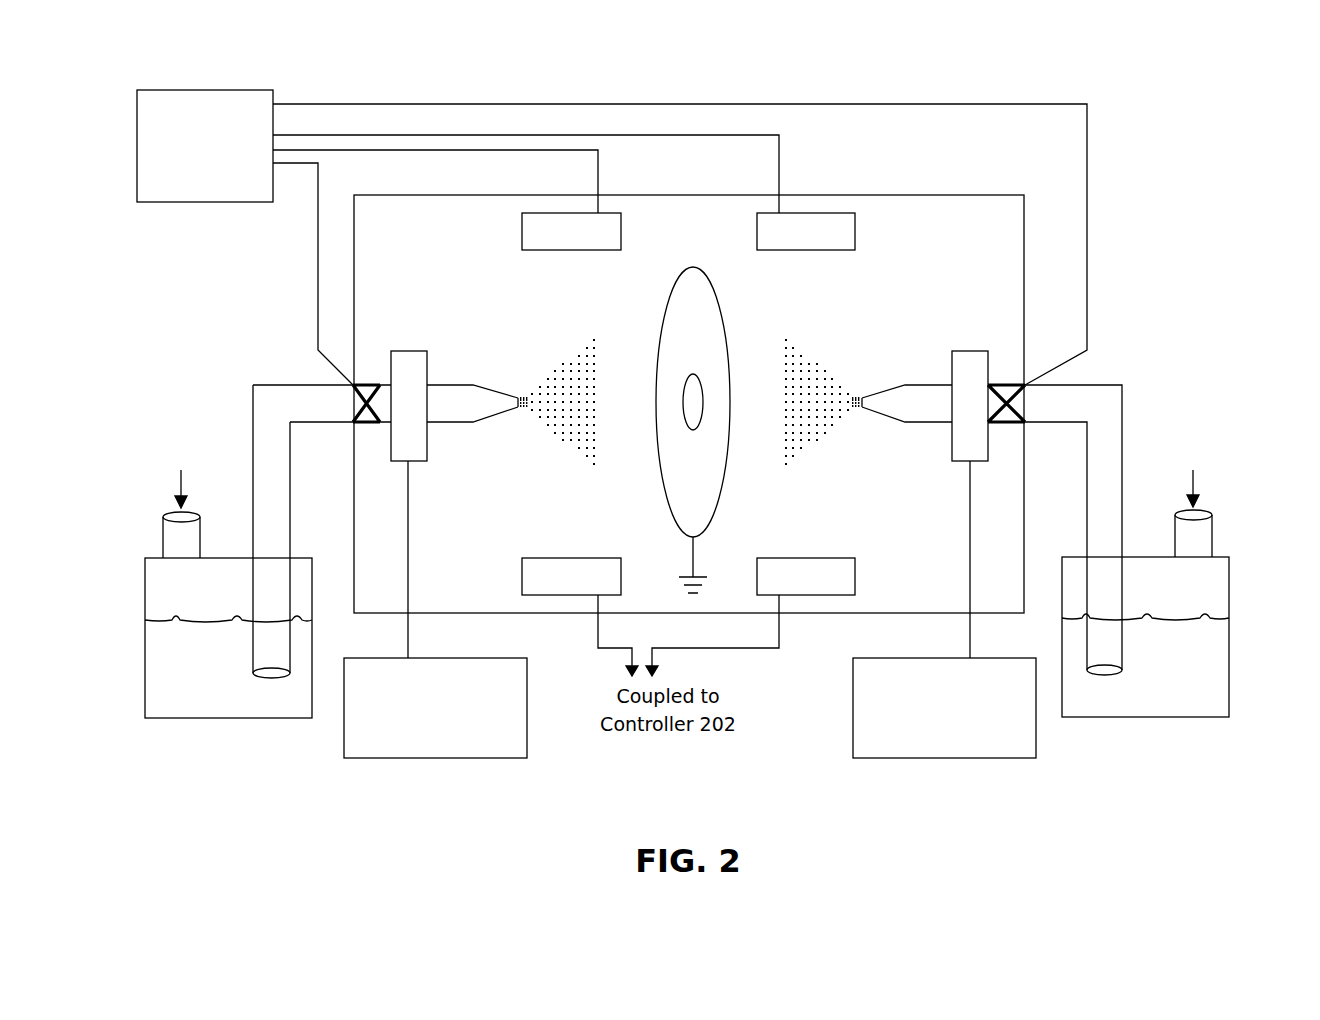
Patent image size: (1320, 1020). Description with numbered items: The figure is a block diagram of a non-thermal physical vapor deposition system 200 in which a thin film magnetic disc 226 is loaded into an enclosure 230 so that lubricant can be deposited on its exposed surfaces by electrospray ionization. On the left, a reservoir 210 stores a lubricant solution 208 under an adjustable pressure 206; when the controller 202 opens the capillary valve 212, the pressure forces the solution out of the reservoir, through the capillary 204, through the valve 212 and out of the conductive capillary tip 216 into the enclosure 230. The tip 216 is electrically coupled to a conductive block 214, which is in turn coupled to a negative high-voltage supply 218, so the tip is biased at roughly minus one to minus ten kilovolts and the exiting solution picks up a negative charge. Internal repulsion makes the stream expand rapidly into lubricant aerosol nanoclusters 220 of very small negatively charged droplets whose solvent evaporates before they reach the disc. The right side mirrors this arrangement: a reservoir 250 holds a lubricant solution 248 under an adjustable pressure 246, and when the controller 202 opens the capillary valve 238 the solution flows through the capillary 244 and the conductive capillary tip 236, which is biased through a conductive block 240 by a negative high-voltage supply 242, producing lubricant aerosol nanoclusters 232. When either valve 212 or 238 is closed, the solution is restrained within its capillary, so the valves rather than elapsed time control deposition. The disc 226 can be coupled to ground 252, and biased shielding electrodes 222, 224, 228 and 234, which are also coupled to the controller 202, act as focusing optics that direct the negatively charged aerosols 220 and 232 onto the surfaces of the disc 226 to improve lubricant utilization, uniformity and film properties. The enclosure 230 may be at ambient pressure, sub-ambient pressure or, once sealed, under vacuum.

The non-thermal physical vapor deposition system 200 is at (1218, 56).
The controller 202 is at (612, 237).
The capillary 204 is at (253, 385).
The adjustable pressure 206 is at (155, 486).
The lubricant solution 208 is at (186, 692).
The reservoir 210 is at (145, 688).
The capillary valve 212 is at (367, 385).
The conductive block 214 is at (427, 449).
The conductive capillary tip 216 is at (492, 388).
The negative high-voltage supply 218 is at (435, 609).
The lubricant aerosol nanoclusters 220 is at (530, 484).
The biased shielding electrode 222 is at (580, 617).
The biased shielding electrode 224 is at (571, 231).
The thin film magnetic disc 226 is at (712, 283).
The biased shielding electrode 228 is at (806, 231).
The enclosure 230 is at (871, 196).
The lubricant aerosol nanoclusters 232 is at (851, 484).
The biased shielding electrode 234 is at (750, 617).
The conductive capillary tip 236 is at (895, 386).
The capillary valve 238 is at (1012, 385).
The conductive block 240 is at (952, 440).
The negative high-voltage supply 242 is at (944, 609).
The capillary 244 is at (1122, 386).
The adjustable pressure 246 is at (1219, 485).
The lubricant solution 248 is at (1158, 683).
The reservoir 250 is at (1229, 683).
The ground 252 is at (690, 577).